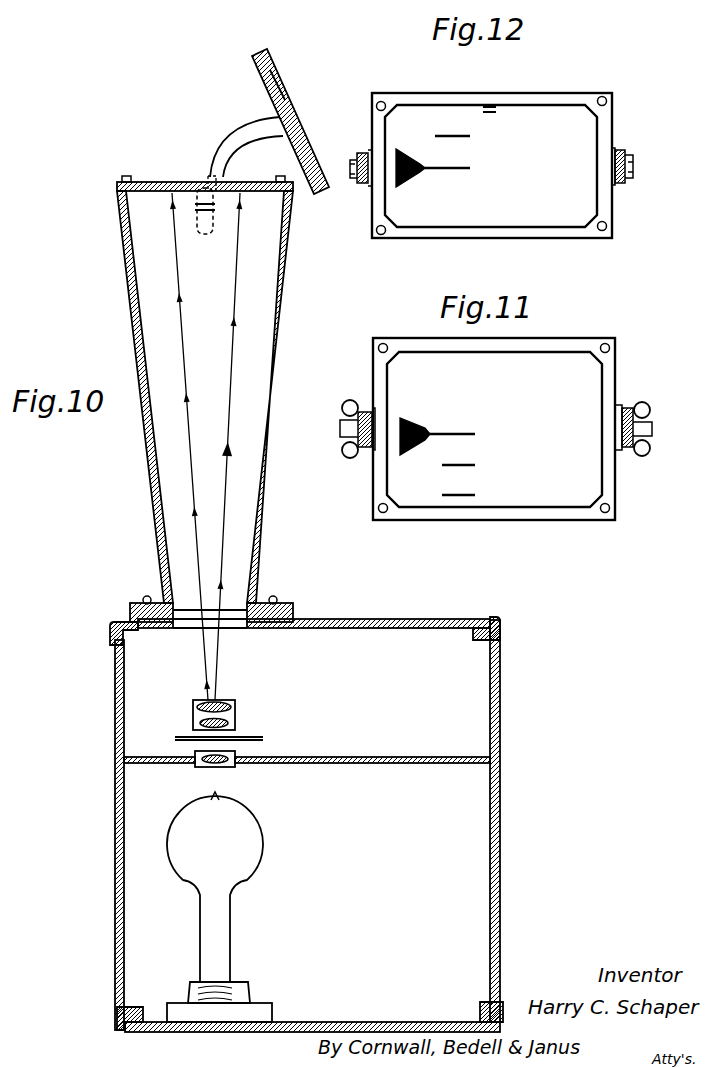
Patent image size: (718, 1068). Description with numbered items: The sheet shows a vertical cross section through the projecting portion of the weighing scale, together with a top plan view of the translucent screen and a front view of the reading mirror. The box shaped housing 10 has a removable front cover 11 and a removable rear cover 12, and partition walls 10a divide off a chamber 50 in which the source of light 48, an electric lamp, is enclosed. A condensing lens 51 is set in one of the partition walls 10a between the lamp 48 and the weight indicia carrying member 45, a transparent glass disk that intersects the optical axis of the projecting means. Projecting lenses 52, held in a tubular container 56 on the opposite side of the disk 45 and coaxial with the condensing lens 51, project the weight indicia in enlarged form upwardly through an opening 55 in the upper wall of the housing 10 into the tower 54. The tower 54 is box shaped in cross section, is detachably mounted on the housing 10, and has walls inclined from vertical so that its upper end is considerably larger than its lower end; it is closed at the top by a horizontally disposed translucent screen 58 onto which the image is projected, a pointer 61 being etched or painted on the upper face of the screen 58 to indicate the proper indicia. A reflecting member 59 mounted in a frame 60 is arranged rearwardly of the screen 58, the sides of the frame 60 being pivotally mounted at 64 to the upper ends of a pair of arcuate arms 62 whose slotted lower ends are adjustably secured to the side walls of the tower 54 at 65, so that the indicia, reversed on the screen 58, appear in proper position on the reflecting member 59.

In FIG. 10, the box shaped housing 10 is at (425, 619).
In FIG. 10, the partition walls 10a is at (412, 755).
In FIG. 10, the removable front cover 11 is at (115, 828).
In FIG. 10, the removable rear cover 12 is at (500, 722).
In FIG. 10, the weight indicia carrying member 45 is at (260, 738).
In FIG. 10, the source of light 48 is at (243, 857).
In FIG. 10, the chamber 50 is at (465, 846).
In FIG. 10, the condensing lens 51 is at (222, 768).
In FIG. 10, the projecting lenses 52 is at (192, 708).
In FIG. 10, the tower 54 is at (130, 306).
In FIG. 11, the tower 54 is at (587, 340).
In FIG. 10, the opening 55 is at (238, 608).
In FIG. 10, the tubular container 56 is at (232, 718).
In FIG. 10, the translucent screen 58 is at (160, 186).
In FIG. 11, the translucent screen 58 is at (418, 368).
In FIG. 10, the reflecting member 59 is at (273, 82).
In FIG. 12, the reflecting member 59 is at (447, 127).
In FIG. 10, the frame 60 is at (278, 88).
In FIG. 12, the frame 60 is at (592, 94).
In FIG. 11, the pointer 61 is at (418, 440).
In FIG. 10, the arcuate arms 62 is at (243, 142).
In FIG. 12, the arcuate arms 62 is at (362, 185).
In FIG. 11, the arcuate arms 62 is at (363, 458).
In FIG. 12, the pivotal mounting 64 is at (355, 160).
In FIG. 11, the adjustable securing means 65 is at (348, 403).